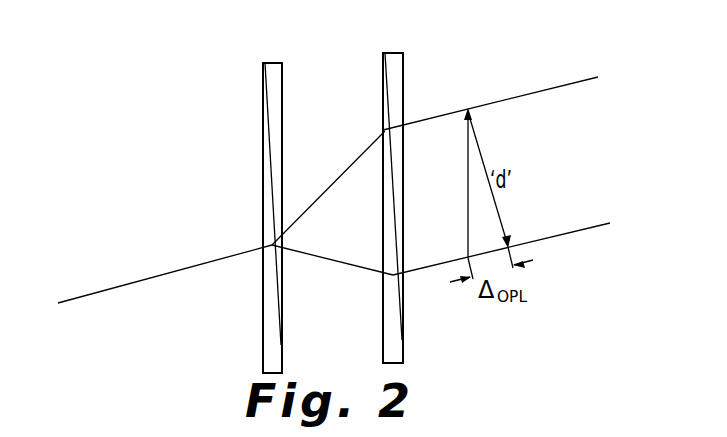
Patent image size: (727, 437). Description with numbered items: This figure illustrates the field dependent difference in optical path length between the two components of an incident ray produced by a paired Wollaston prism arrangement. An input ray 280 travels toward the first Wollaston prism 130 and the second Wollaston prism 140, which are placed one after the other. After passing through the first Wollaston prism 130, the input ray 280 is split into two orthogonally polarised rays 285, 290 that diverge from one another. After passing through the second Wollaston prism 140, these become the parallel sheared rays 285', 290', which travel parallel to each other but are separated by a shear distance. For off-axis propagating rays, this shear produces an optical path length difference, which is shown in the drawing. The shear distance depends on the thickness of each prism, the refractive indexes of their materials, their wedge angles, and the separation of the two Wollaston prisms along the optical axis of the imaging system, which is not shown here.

The first Wollaston prism 130 is at (262, 80).
The second Wollaston prism 140 is at (382, 67).
The input ray 280 is at (187, 267).
The orthogonally polarised ray 285 is at (328, 173).
The orthogonally polarised ray 290 is at (332, 289).
The parallel sheared ray 285' is at (490, 87).
The parallel sheared ray 290' is at (515, 268).